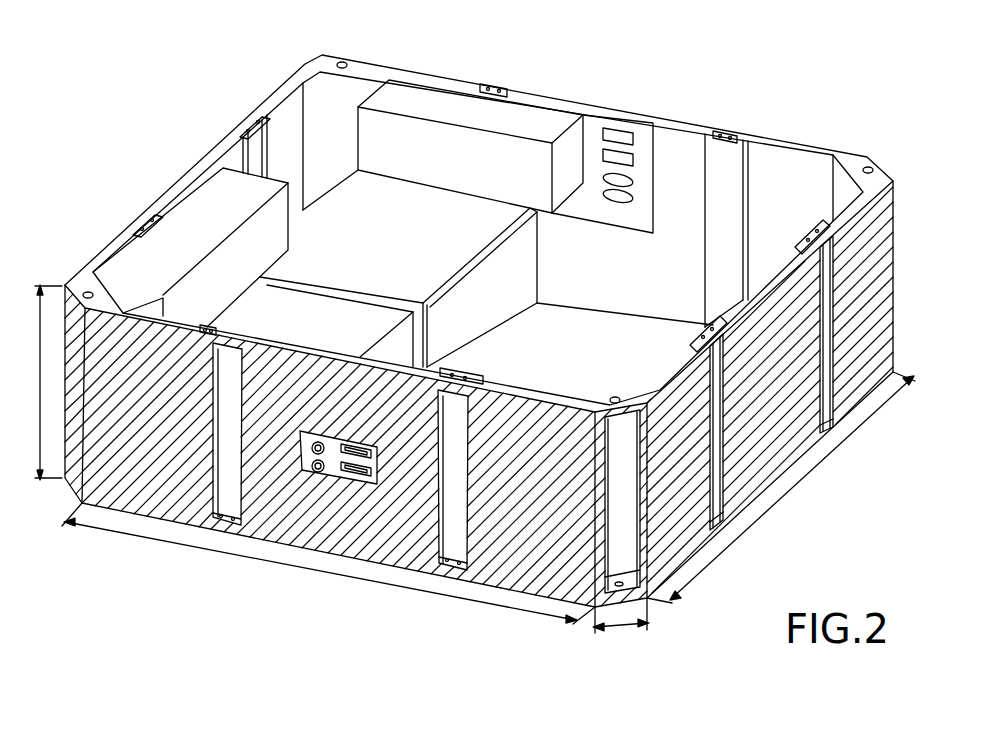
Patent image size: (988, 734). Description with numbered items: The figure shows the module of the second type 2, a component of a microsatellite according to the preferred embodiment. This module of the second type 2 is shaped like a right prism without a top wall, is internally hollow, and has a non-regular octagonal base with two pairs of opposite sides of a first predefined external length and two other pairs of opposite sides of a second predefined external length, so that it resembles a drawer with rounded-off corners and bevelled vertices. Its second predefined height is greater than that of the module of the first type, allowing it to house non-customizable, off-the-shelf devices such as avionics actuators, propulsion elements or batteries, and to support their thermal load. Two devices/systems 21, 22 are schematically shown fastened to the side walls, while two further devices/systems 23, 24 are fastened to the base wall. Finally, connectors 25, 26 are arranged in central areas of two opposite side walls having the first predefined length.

The module of the second type 2 is at (158, 117).
The device/system 21 is at (533, 118).
The device/system 22 is at (190, 228).
The device/system 23 is at (348, 200).
The device/system 24 is at (247, 315).
The connector 25 is at (637, 210).
The connector 26 is at (328, 473).